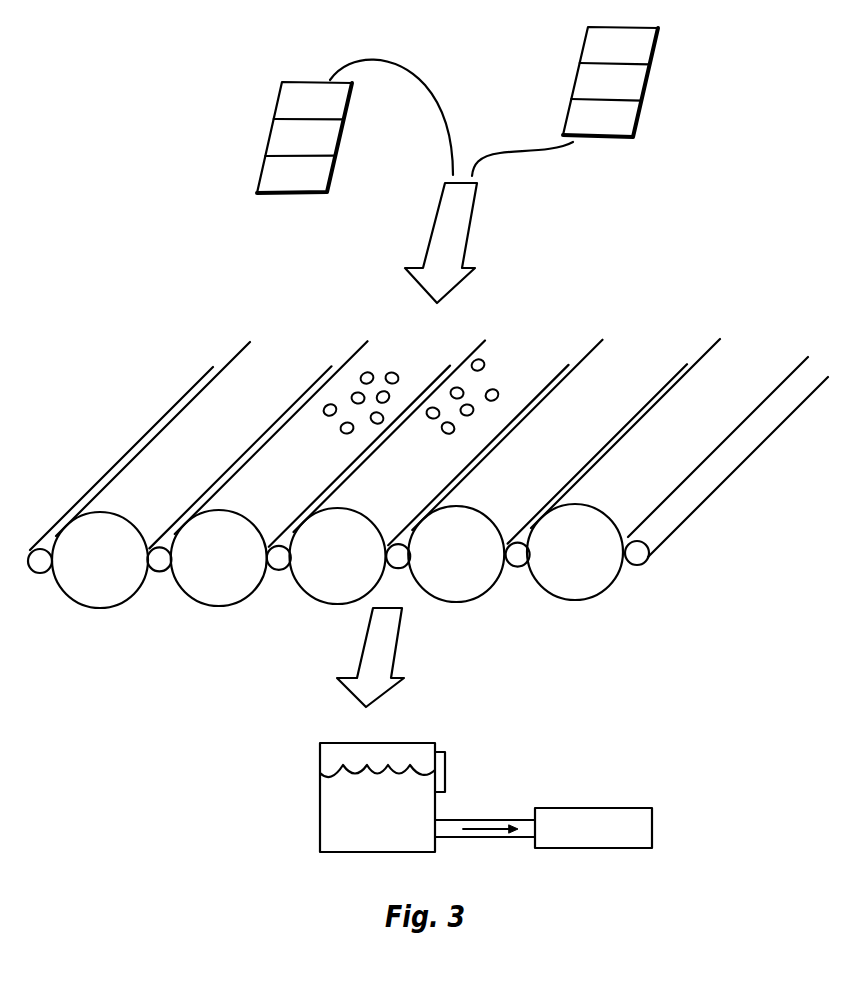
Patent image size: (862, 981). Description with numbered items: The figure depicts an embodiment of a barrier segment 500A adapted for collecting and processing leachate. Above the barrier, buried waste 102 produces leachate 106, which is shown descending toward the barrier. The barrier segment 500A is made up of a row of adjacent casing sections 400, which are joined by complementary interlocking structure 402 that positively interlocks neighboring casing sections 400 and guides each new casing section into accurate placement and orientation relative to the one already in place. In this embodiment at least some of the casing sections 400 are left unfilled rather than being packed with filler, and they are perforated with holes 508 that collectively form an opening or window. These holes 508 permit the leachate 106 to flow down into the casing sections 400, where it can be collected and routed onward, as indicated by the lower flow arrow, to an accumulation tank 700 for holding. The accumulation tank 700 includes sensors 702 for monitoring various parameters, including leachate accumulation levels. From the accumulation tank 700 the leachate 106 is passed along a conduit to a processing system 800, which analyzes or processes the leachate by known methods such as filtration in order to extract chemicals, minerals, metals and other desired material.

The buried waste 102 is at (257, 173).
The leachate 106 is at (465, 240).
The casing sections 400 is at (472, 603).
The complementary interlocking structure 402 is at (160, 574).
The barrier segment 500A is at (275, 611).
The holes 508 is at (500, 388).
The accumulation tank 700 is at (320, 837).
The sensors 702 is at (447, 765).
The processing system 800 is at (627, 807).